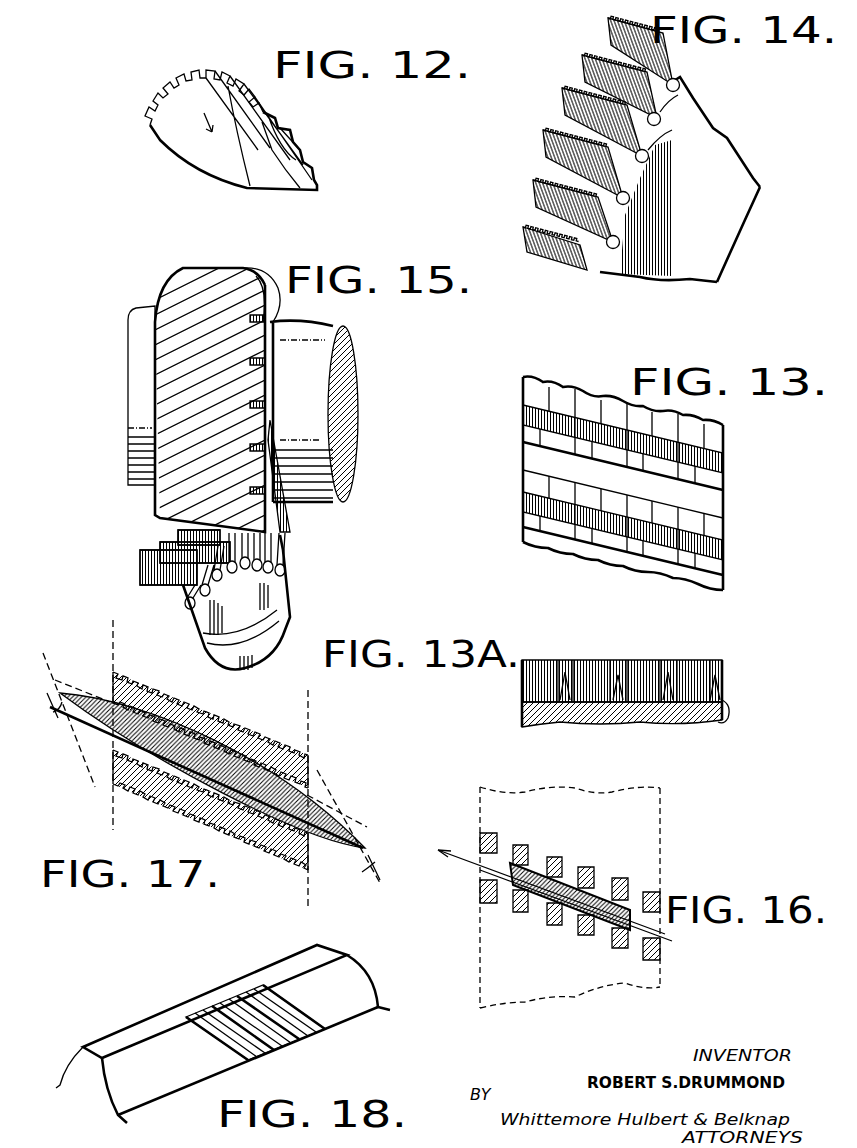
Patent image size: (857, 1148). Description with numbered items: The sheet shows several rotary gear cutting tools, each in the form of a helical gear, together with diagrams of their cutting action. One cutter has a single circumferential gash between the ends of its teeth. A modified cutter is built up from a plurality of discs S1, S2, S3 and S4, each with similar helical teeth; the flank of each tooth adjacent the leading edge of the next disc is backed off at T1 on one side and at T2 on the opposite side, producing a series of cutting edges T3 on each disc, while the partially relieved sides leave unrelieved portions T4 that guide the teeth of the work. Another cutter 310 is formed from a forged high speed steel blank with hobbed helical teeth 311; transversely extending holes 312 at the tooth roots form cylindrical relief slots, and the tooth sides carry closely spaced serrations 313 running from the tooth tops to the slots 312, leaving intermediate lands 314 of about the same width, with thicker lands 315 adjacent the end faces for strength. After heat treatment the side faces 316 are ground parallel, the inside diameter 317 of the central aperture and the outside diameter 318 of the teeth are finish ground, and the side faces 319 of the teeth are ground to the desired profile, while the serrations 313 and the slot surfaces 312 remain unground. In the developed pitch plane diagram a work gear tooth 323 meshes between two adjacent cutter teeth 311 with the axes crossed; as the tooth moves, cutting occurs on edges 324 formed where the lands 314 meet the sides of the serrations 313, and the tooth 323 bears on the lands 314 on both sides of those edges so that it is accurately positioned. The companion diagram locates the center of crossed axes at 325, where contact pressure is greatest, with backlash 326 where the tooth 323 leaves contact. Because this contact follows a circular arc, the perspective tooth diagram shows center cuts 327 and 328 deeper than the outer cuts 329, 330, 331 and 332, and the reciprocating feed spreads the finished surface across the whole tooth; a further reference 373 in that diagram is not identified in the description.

In FIG. 14, the rotary gear cutting tool 310 is at (712, 142).
In FIG. 16, the rotary gear cutting tool 310 is at (655, 837).
In FIG. 14, the teeth 311 is at (648, 83).
In FIG. 17, the teeth 311 is at (307, 773).
In FIG. 16, the teeth 311 is at (555, 868).
In FIG. 14, the transversely extending holes 312 is at (660, 118).
In FIG. 14, the serrations 313 is at (598, 47).
In FIG. 17, the serrations 313 is at (218, 714).
In FIG. 16, the serrations 313 is at (513, 918).
In FIG. 17, the intermediate lands 314 is at (268, 738).
In FIG. 16, the intermediate lands 314 is at (525, 905).
In FIG. 14, the lands adjacent the end faces 315 is at (560, 148).
In FIG. 17, the side faces of the tool 316 is at (113, 690).
In FIG. 14, the inside diameter of the central aperture 317 is at (743, 208).
In FIG. 14, the outside diameter of the gear teeth 318 is at (627, 123).
In FIG. 14, the side faces of the gear teeth 319 is at (553, 160).
In FIG. 17, the gear tooth 323 is at (358, 830).
In FIG. 16, the gear tooth 323 is at (625, 928).
In FIG. 16, the cutting edges 324 is at (535, 858).
In FIG. 17, the center of crossed axes 325 is at (218, 760).
In FIG. 17, the backlash 326 is at (58, 730).
In FIG. 18, the center cut 327 is at (222, 1000).
In FIG. 18, the center cut 328 is at (212, 1010).
In FIG. 18, the outer cut 329 is at (342, 1020).
In FIG. 18, the outer cut 330 is at (303, 1030).
In FIG. 18, the outer cut 331 is at (262, 1057).
In FIG. 18, the outer cut 332 is at (240, 1058).
In FIG. 18, the rail end 373 is at (122, 1090).
In FIG. 13, the disc S4 is at (553, 397).
In FIG. 13, the disc S3 is at (603, 410).
In FIG. 13, the disc S2 is at (658, 427).
In FIG. 13, the disc S1 is at (698, 440).
In FIG. 13, the cutting edges T3 is at (570, 488).
In FIG. 13A, the cutting edges T3 is at (572, 695).
In FIG. 13, the relieved flank T2 is at (717, 447).
In FIG. 13, the relieved flank T1 is at (693, 483).
In FIG. 13A, the relieved flank T1 is at (537, 660).
In FIG. 13A, the unrelieved portions T4 is at (565, 660).